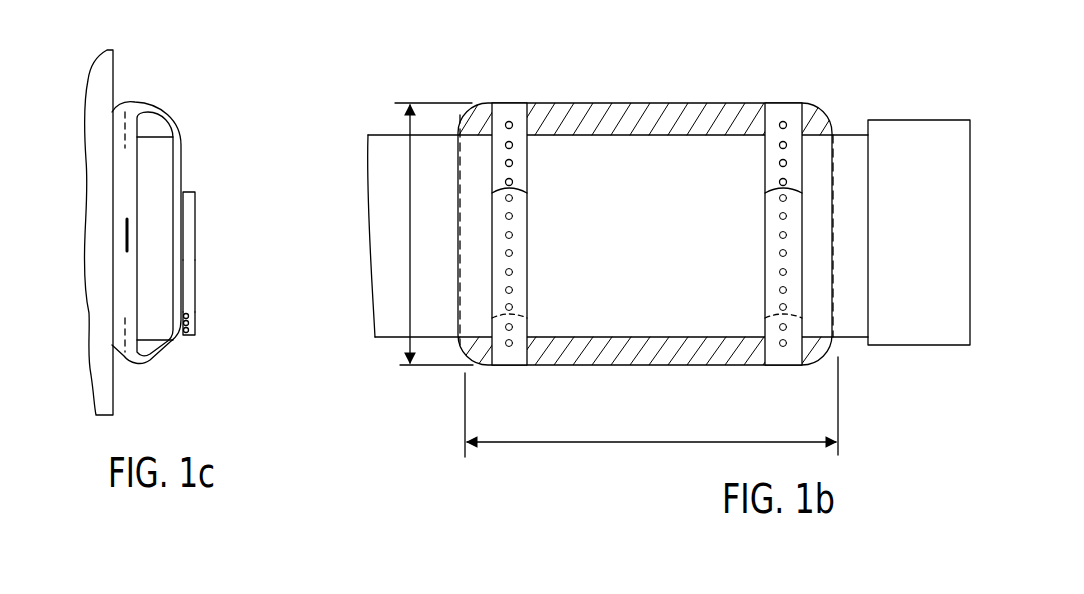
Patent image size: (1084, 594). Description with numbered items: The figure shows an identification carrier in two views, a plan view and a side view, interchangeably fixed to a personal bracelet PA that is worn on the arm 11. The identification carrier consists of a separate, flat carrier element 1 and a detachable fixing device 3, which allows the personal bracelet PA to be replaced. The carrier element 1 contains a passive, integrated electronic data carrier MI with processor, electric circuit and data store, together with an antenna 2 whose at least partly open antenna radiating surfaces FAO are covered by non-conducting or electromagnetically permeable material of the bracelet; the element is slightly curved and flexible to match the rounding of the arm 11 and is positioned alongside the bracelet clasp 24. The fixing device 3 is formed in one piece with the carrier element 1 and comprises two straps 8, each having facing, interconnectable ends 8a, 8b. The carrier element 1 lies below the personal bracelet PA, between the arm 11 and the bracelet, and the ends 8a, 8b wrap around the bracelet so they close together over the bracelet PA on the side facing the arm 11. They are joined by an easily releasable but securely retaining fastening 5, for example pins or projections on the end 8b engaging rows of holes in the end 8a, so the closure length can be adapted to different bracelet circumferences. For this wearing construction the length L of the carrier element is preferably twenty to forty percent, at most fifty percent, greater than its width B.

In FIG. 1c, the carrier element 1 is at (132, 102).
In FIG. 1b, the carrier element 1 is at (575, 100).
In FIG. 1c, the antenna 2 is at (131, 350).
In FIG. 1c, the fixing device 3 is at (197, 345).
In FIG. 1b, the fixing device 3 is at (507, 98).
In FIG. 1c, the fastening 5 is at (184, 267).
In FIG. 1b, the fastening 5 is at (765, 226).
In FIG. 1b, the straps 8 is at (765, 165).
In FIG. 1c, the strap end 8a is at (181, 177).
In FIG. 1b, the strap end 8a is at (527, 162).
In FIG. 1c, the strap end 8b is at (188, 297).
In FIG. 1b, the strap end 8b is at (528, 262).
In FIG. 1c, the arm 11 is at (101, 78).
In FIG. 1b, the bracelet clasp 24 is at (912, 133).
In FIG. 1c, the personal bracelet PA is at (160, 158).
In FIG. 1b, the personal bracelet PA is at (383, 143).
In FIG. 1b, the antenna radiating surfaces FAO is at (690, 125).
In FIG. 1c, the data carrier MI is at (128, 235).
In FIG. 1b, the width B is at (434, 234).
In FIG. 1b, the length L is at (651, 407).